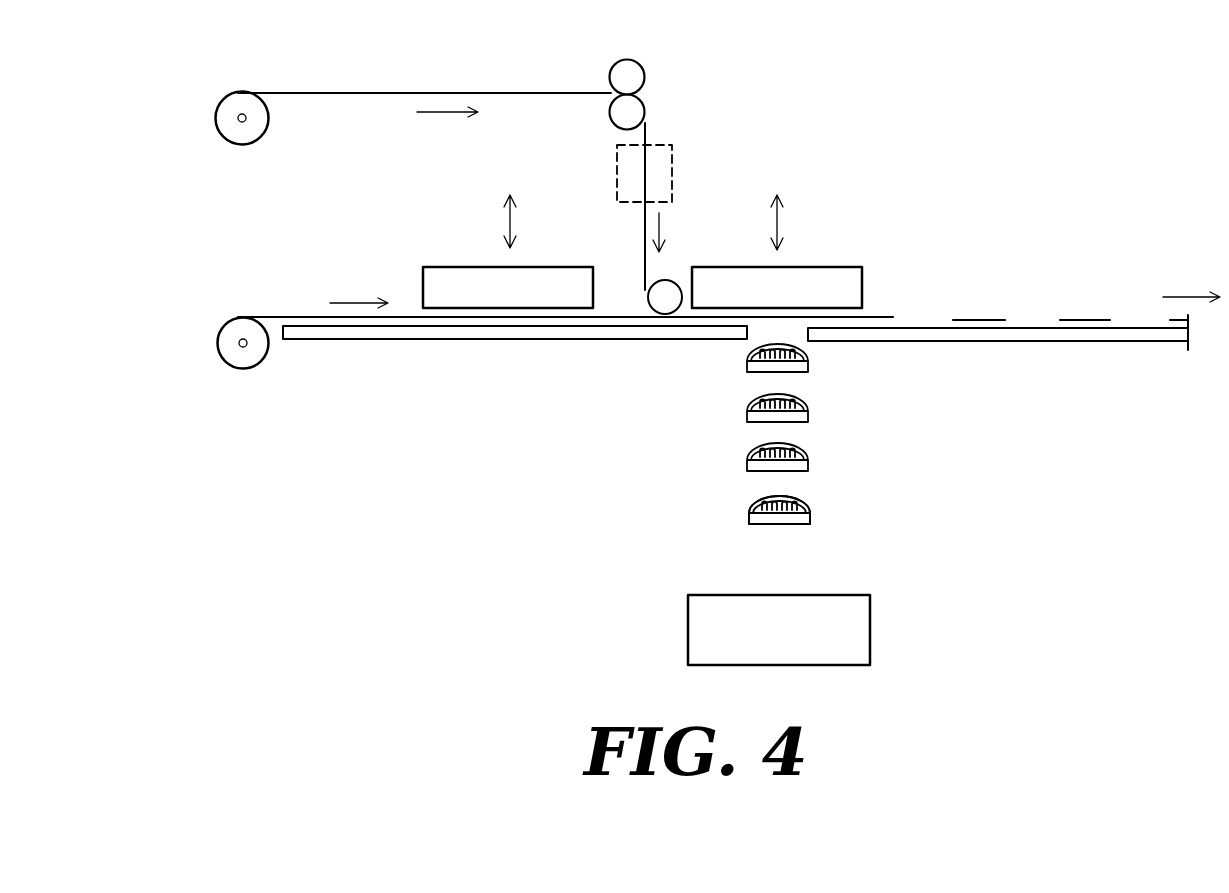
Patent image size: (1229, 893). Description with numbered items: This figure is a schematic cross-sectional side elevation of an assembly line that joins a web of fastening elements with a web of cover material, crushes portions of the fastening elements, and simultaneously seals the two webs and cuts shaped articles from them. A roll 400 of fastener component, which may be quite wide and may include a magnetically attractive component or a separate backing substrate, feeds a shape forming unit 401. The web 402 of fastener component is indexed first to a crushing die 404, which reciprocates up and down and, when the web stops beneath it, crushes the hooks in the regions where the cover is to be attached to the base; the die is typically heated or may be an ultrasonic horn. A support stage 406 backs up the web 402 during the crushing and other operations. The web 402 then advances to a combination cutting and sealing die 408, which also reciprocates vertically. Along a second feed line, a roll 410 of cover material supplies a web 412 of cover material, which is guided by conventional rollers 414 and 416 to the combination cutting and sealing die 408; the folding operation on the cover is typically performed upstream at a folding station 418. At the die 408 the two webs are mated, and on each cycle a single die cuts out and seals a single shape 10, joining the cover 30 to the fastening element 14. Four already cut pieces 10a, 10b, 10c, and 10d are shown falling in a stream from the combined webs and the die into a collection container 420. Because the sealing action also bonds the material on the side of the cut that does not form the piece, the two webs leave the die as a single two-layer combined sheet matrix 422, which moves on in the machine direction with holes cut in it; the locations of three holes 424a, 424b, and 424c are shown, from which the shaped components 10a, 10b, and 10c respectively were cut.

The roll of fastener component 400 is at (226, 350).
The shape forming unit 401 is at (513, 402).
The web of fastener component 402 is at (302, 316).
The crushing die 404 is at (466, 267).
The support stage 406 is at (427, 334).
The combination cutting and sealing die 408 is at (815, 267).
The roll of cover material 410 is at (232, 98).
The web of cover material 412 is at (360, 93).
The roller 414 is at (655, 66).
The roller 416 is at (667, 288).
The folding station 418 is at (672, 142).
The collection container 420 is at (797, 640).
The combined sheet matrix 422 is at (879, 320).
The hole 424a is at (1138, 320).
The hole 424b is at (1029, 322).
The hole 424c is at (924, 320).
The shape 10 is at (733, 521).
The cut piece 10a is at (810, 516).
The cut piece 10b is at (808, 462).
The cut piece 10c is at (745, 416).
The cut piece 10d is at (745, 366).
The cover 30 is at (792, 498).
The fastening element 14 is at (797, 524).